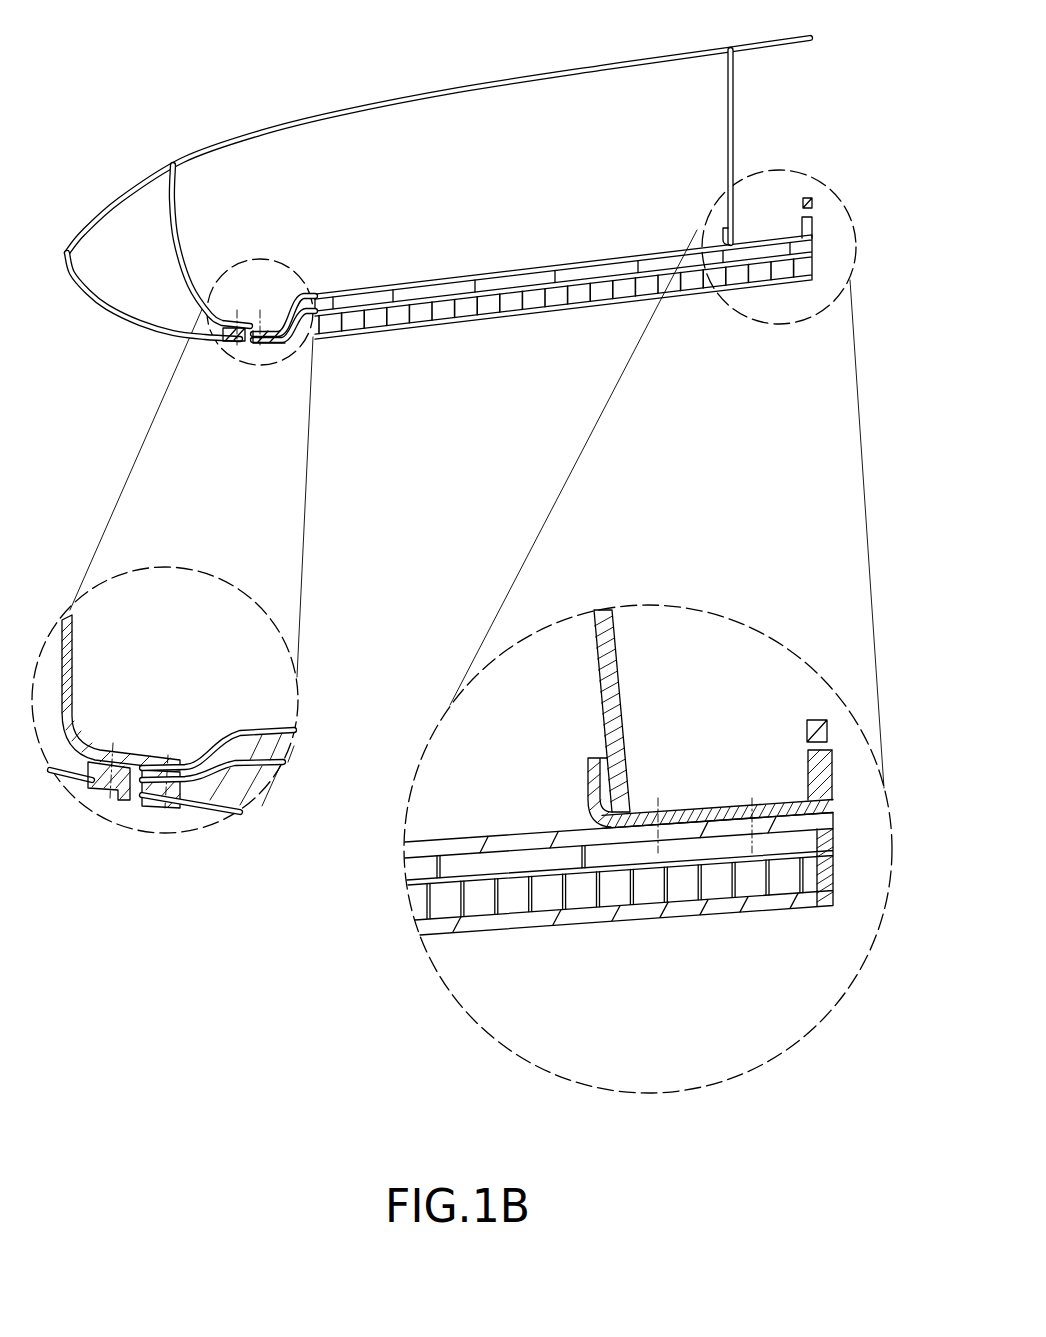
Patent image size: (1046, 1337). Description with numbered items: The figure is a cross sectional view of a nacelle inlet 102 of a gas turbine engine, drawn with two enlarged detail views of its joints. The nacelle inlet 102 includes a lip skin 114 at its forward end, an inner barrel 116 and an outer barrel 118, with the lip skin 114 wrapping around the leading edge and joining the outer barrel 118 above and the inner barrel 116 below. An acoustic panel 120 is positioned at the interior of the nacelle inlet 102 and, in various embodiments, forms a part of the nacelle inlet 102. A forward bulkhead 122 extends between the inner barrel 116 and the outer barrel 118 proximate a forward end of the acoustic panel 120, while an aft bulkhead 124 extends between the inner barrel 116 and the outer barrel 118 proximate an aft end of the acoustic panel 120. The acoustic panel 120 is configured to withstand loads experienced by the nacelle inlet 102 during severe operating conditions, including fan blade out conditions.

The nacelle inlet 102 is at (205, 87).
The lip skin 114 is at (88, 213).
The inner barrel 116 is at (493, 322).
The outer barrel 118 is at (376, 98).
The acoustic panel 120 is at (398, 317).
The forward bulkhead 122 is at (180, 210).
The aft bulkhead 124 is at (730, 133).